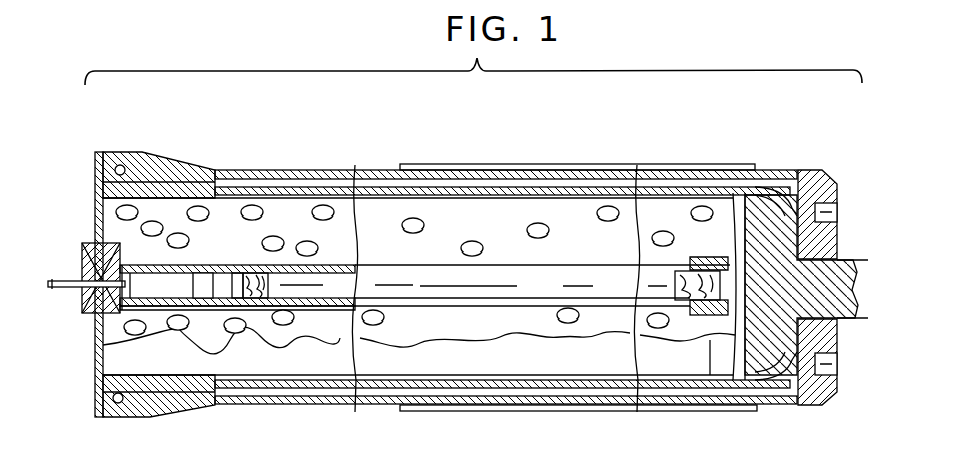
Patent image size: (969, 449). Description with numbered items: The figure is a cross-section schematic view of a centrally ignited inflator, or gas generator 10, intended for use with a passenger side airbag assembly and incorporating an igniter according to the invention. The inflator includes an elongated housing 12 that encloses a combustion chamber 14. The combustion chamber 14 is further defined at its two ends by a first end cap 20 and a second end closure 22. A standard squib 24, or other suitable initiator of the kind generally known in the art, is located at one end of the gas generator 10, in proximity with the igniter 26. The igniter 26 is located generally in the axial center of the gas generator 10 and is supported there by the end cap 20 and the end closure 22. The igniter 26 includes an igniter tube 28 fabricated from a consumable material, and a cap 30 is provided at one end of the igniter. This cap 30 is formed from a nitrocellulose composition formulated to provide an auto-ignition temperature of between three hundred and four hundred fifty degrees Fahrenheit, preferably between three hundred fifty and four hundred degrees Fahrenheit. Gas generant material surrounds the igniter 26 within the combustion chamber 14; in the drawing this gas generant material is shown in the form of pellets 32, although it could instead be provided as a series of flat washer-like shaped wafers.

The gas generator 10 is at (596, 161).
The elongated housing 12 is at (434, 190).
The combustion chamber 14 is at (402, 371).
The first end cap 20 is at (98, 350).
The second end closure 22 is at (838, 232).
The squib 24 is at (118, 283).
The igniter 26 is at (255, 302).
The igniter tube 28 is at (241, 268).
The cap 30 is at (722, 262).
The pellets 32 is at (568, 323).